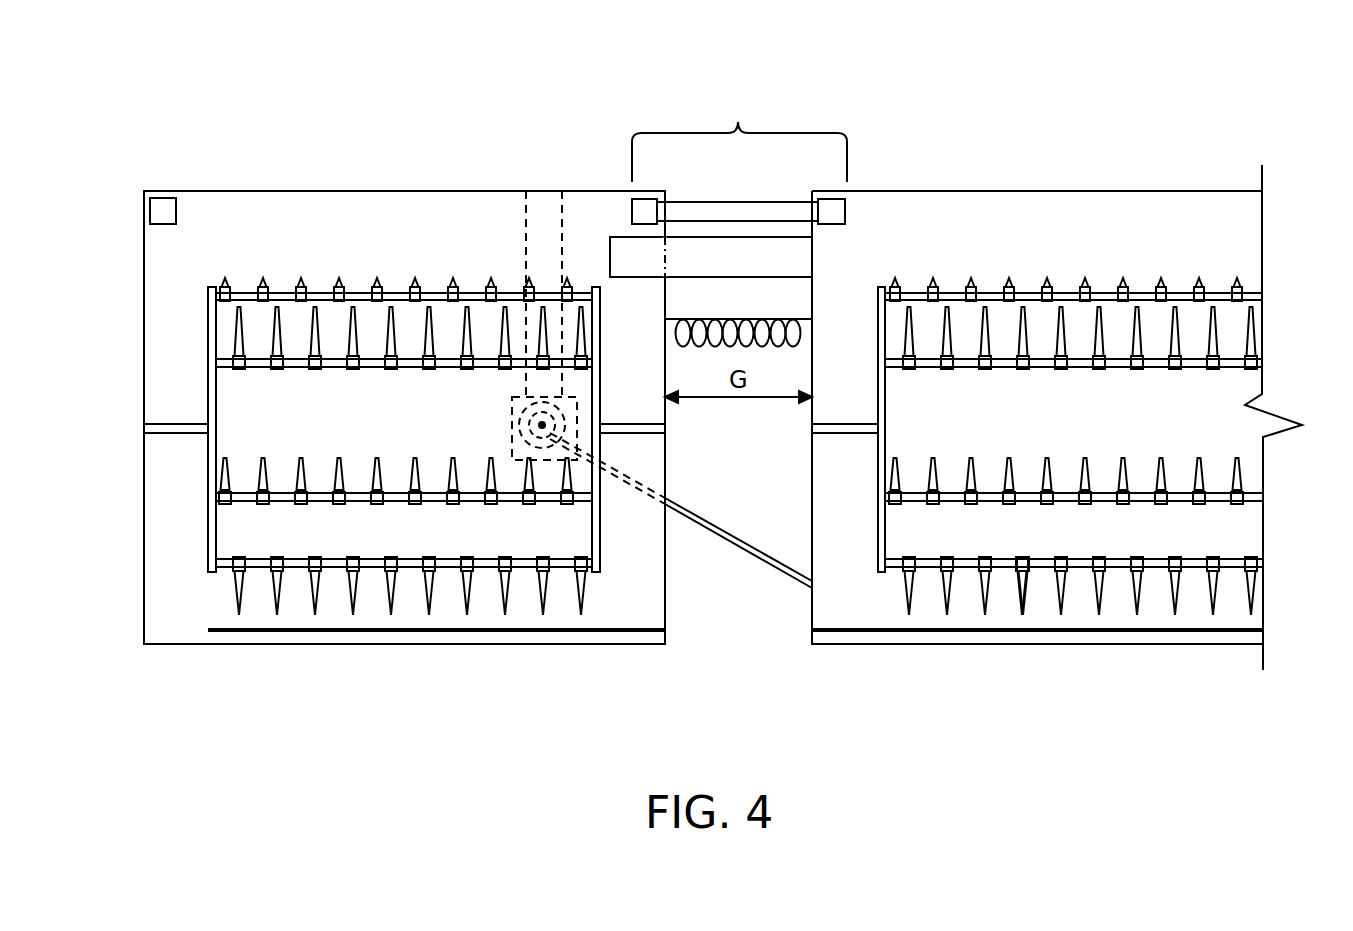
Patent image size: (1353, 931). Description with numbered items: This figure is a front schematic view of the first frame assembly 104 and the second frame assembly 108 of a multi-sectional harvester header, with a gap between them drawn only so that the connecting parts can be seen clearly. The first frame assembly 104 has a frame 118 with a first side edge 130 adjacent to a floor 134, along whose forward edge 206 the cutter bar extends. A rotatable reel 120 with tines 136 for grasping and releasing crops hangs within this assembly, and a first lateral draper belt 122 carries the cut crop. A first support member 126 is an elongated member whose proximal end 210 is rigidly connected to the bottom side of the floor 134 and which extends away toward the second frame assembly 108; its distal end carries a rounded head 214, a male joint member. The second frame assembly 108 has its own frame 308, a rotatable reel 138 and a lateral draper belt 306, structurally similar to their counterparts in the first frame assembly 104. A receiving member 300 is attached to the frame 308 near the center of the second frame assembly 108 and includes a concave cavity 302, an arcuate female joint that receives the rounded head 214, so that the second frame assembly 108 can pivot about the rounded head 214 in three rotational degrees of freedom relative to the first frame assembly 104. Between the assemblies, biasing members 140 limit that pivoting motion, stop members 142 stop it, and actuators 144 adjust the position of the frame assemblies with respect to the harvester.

The first frame assembly 104 is at (1212, 172).
The second frame assembly 108 is at (350, 172).
The frame 118 is at (1163, 192).
The rotatable reel 120 is at (882, 573).
The first lateral draper belt 122 is at (953, 632).
The first support member 126 is at (750, 558).
The first side edge 130 is at (805, 216).
The floor 134 is at (1132, 622).
The tines 136 is at (1027, 588).
The rotatable reel 138 is at (207, 545).
The biasing members 140 is at (787, 317).
The stop members 142 is at (720, 237).
The actuators 144 is at (162, 208).
The forward edge 206 is at (1195, 640).
The proximal end 210 is at (803, 600).
The rounded head 214 is at (543, 428).
The receiving member 300 is at (577, 397).
The concave cavity 302 is at (545, 445).
The lateral draper belt 306 is at (590, 645).
The frame 308 is at (523, 192).